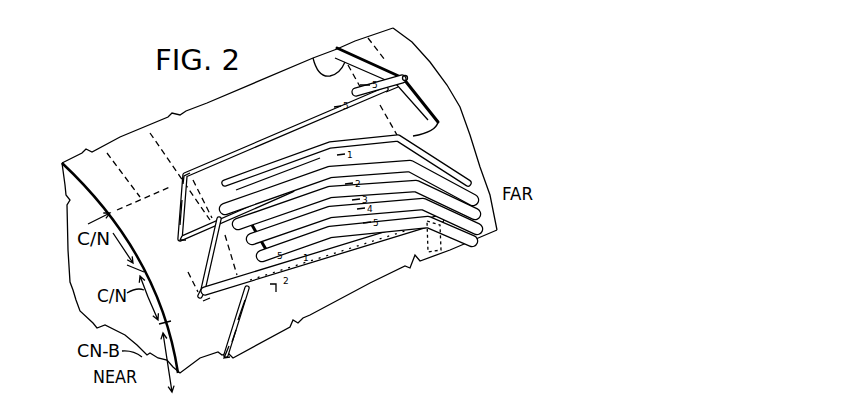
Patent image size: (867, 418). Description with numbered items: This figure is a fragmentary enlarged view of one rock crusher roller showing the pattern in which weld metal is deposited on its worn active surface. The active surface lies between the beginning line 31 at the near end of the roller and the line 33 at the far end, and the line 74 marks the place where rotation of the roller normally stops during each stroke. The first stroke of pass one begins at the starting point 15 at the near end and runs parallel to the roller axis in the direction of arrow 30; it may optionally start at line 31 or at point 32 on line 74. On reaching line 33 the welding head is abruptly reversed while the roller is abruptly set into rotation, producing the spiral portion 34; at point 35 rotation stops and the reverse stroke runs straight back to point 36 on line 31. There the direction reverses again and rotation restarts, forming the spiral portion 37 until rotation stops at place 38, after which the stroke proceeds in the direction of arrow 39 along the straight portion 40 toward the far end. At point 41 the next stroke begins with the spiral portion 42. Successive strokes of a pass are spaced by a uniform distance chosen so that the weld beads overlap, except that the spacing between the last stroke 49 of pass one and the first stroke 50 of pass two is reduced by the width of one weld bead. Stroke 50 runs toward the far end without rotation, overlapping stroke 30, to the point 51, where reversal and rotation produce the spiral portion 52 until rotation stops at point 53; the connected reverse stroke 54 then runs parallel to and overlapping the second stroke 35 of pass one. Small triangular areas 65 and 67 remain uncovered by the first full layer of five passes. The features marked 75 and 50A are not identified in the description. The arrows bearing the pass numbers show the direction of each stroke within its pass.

The beginning line 31 is at (110, 160).
The rotation stop line 74 is at (153, 133).
The roof notch 75 is at (318, 70).
The spiral portion 42 is at (370, 60).
The stroke starting point 41 is at (408, 78).
The straight stroke portion 40 is at (312, 126).
The direction arrow 39 is at (225, 161).
The rotation stop place 38 is at (182, 173).
The spiral portion 37 is at (177, 216).
The stroke end point 36 is at (182, 250).
The rotation stop point 35 is at (404, 143).
The spiral portion 34 is at (453, 153).
The far end line 33 is at (470, 167).
The optional starting point 32 is at (241, 286).
The first stroke direction arrow 30 is at (290, 268).
The starting point 15 is at (203, 301).
The first stroke of pass two 50 is at (228, 324).
The bracket arm 50A is at (273, 290).
The last stroke of pass one 49 is at (231, 354).
The triangular uncovered area 65 is at (217, 340).
The far end point 51 is at (475, 192).
The spiral portion 52 is at (443, 138).
The rotation stop point 53 is at (436, 127).
The reverse stroke of pass two 54 is at (335, 184).
The triangular uncovered area 67 is at (462, 151).